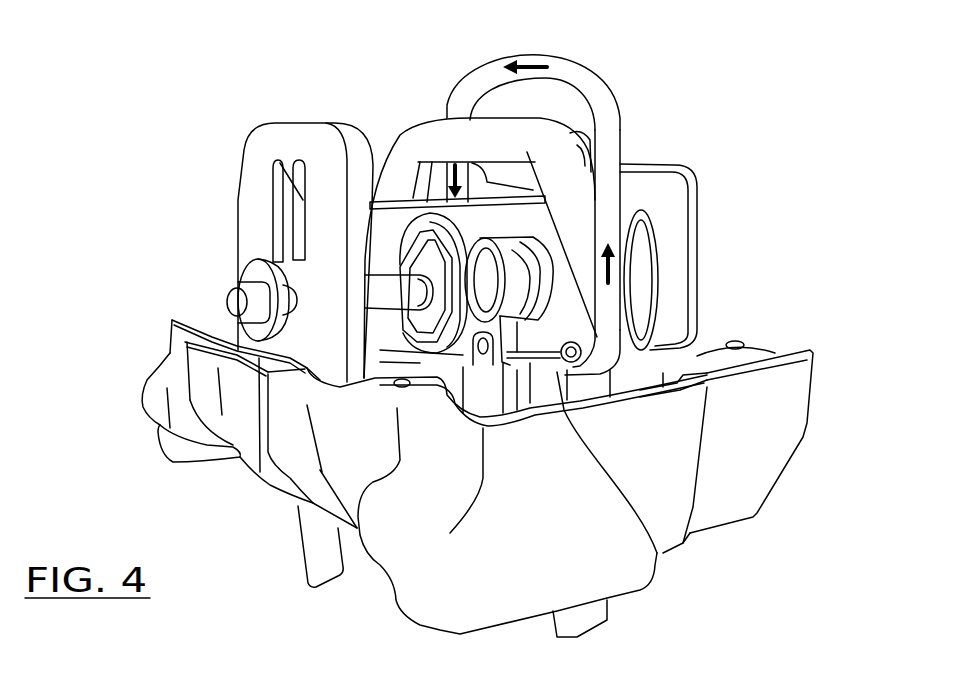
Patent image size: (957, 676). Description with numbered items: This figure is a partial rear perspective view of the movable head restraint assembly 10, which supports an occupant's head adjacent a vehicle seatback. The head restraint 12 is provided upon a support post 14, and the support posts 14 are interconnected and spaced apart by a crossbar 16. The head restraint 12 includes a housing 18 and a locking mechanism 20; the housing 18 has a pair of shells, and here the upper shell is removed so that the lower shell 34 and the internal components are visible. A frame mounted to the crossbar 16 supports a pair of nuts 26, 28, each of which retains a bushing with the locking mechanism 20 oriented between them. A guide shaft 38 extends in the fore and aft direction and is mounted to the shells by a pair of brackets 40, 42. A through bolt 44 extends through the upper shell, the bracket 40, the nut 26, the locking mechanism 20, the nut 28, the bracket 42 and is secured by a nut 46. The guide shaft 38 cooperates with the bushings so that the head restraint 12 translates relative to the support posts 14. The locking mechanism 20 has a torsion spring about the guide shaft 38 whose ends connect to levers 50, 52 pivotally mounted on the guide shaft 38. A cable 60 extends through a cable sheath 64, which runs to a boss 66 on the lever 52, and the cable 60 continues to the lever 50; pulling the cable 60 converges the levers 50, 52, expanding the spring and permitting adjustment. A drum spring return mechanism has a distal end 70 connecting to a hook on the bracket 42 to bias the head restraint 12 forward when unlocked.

The head restraint assembly 10 is at (778, 174).
The head restraint 12 is at (834, 360).
The support post 14 is at (313, 543).
The crossbar 16 is at (490, 130).
The housing 18 is at (832, 400).
The locking mechanism 20 is at (527, 224).
The nut 26 is at (623, 270).
The nut 28 is at (398, 238).
The lower shell 34 is at (680, 503).
The guide shaft 38 is at (373, 290).
The bracket 40 is at (670, 188).
The bracket 42 is at (246, 154).
The through bolt 44 is at (227, 305).
The nut 46 is at (250, 267).
The lever 50 is at (568, 282).
The lever 52 is at (523, 327).
The cable 60 is at (582, 62).
The cable sheath 64 is at (621, 103).
The boss 66 is at (657, 553).
The distal end 70 is at (412, 196).